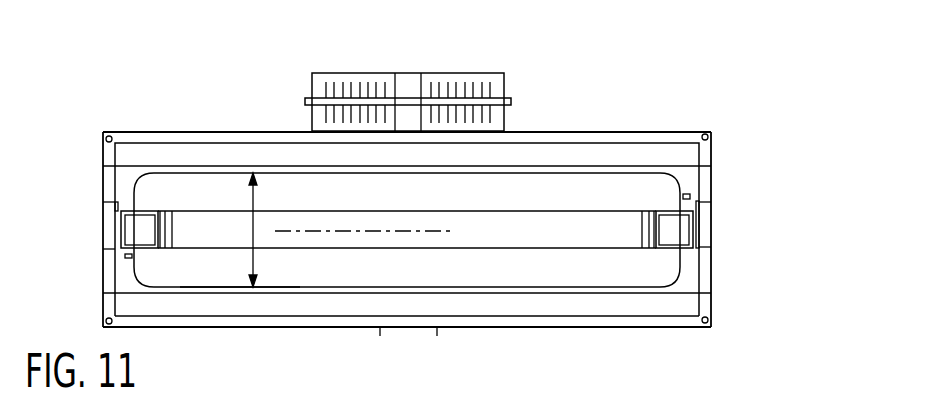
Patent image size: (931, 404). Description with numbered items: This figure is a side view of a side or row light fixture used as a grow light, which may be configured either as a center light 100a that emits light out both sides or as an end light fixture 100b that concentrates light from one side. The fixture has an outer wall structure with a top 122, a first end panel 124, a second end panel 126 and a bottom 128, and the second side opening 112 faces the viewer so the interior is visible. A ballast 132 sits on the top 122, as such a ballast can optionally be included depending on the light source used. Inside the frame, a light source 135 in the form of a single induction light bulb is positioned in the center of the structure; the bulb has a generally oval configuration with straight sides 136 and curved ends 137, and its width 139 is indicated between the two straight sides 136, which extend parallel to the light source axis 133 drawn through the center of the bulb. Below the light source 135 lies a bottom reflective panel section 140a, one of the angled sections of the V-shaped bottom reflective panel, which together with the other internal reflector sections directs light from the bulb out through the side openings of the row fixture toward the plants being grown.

The center light 100a is at (712, 109).
The end light fixture 100b is at (402, 202).
The second side opening 112 is at (608, 307).
The top 122 is at (552, 130).
The first end panel 124 is at (713, 193).
The second end panel 126 is at (102, 192).
The bottom 128 is at (350, 328).
The ballast 132 is at (432, 72).
The light source axis 133 is at (350, 232).
The light source 135 is at (221, 287).
The straight sides 136 is at (593, 182).
The curved ends 137 is at (153, 187).
The width 139 is at (253, 261).
The bottom reflective panel section 140a is at (235, 308).